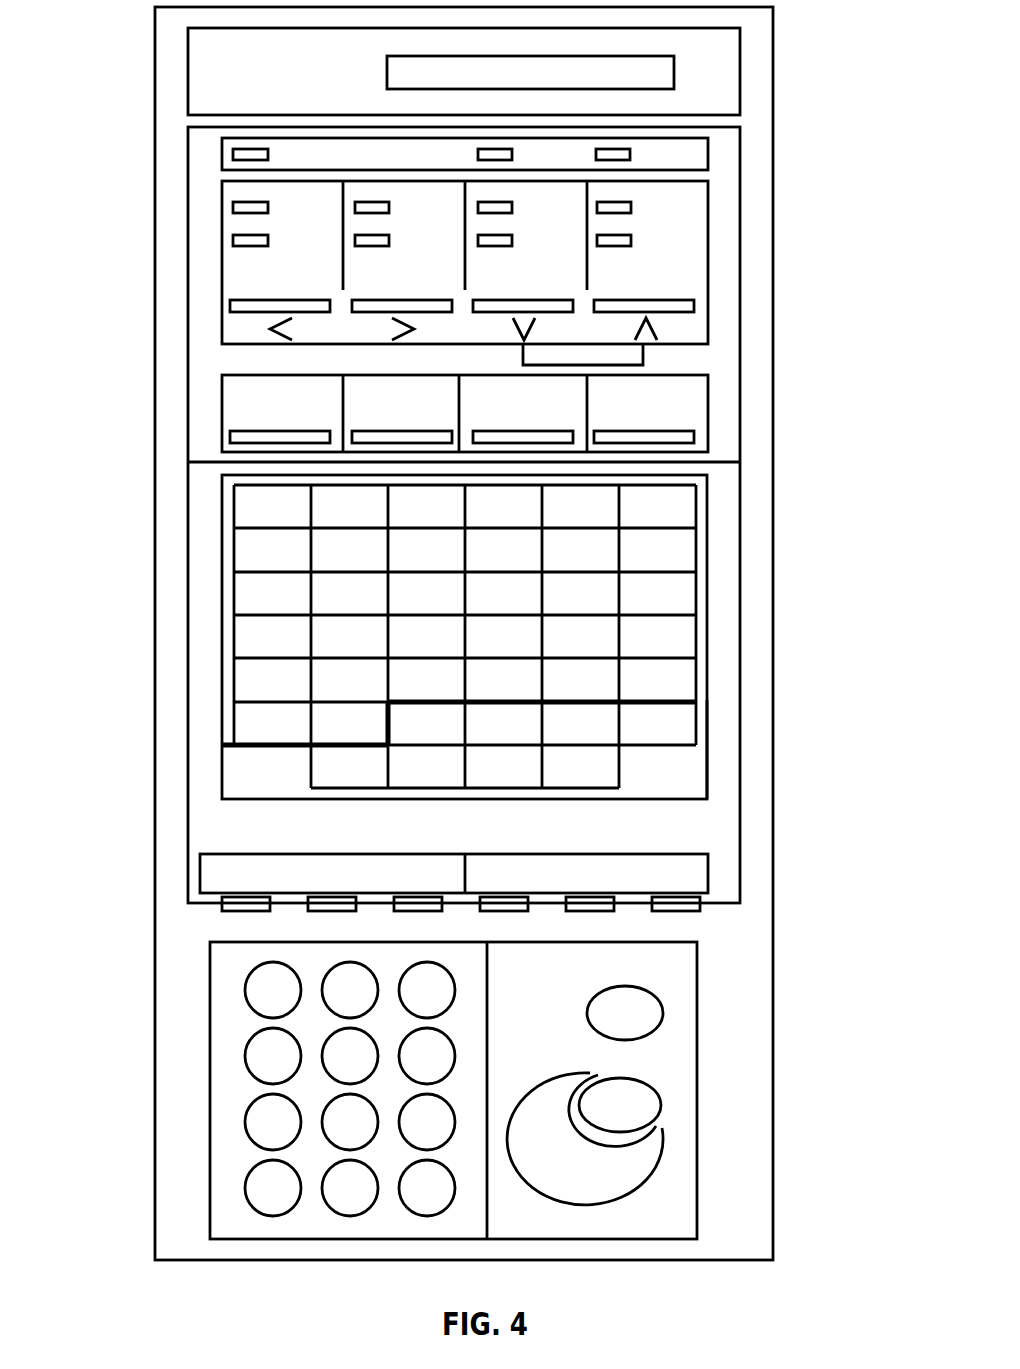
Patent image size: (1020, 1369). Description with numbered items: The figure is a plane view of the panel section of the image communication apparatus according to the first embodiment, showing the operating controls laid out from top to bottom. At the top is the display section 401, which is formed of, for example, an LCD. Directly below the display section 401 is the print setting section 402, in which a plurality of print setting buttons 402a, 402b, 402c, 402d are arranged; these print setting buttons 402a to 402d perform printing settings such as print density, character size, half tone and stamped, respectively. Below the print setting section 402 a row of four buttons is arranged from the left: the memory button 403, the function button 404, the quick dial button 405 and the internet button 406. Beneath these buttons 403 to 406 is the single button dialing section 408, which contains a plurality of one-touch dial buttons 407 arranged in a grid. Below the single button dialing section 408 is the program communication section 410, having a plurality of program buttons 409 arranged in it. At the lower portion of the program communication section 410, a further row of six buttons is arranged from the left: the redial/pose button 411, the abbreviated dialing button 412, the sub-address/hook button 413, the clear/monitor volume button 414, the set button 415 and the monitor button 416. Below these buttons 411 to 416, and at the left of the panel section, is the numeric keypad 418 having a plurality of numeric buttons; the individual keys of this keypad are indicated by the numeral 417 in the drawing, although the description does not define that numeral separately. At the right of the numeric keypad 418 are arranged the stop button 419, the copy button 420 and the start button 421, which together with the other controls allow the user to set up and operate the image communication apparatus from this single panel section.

The display section 401 is at (674, 77).
The print setting section 402 is at (707, 193).
The print setting button 402a is at (247, 313).
The print setting button 402b is at (373, 313).
The print setting button 402c is at (553, 300).
The print setting button 402d is at (667, 300).
The memory button 403 is at (243, 443).
The function button 404 is at (373, 443).
The quick dial button 405 is at (553, 432).
The internet button 406 is at (665, 432).
The one-touch dial button 407 is at (265, 592).
The single button dialing section 408 is at (708, 565).
The program button 409 is at (340, 773).
The program communication section 410 is at (708, 750).
The redial/pose button 411 is at (247, 910).
The abbreviated dialing button 412 is at (323, 912).
The sub-address/hook button 413 is at (410, 913).
The clear/monitor volume button 414 is at (667, 912).
The set button 415 is at (600, 912).
The monitor button 416 is at (522, 912).
The numeric keys 417 is at (257, 1130).
The numeric keypad 418 is at (210, 1210).
The stop button 419 is at (647, 1037).
The copy button 420 is at (657, 1123).
The start button 421 is at (613, 1187).